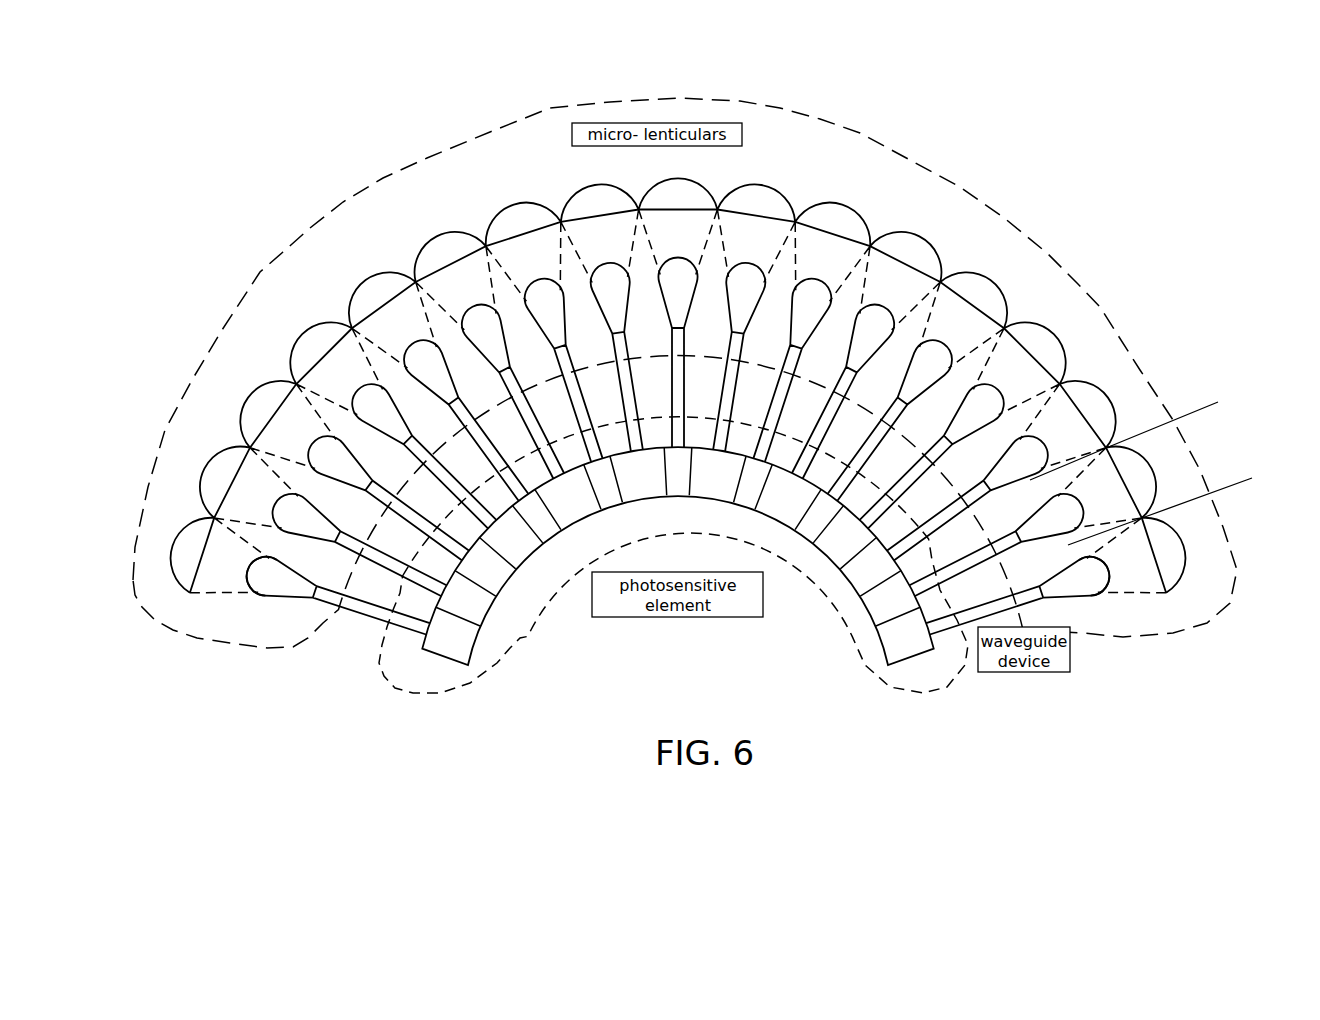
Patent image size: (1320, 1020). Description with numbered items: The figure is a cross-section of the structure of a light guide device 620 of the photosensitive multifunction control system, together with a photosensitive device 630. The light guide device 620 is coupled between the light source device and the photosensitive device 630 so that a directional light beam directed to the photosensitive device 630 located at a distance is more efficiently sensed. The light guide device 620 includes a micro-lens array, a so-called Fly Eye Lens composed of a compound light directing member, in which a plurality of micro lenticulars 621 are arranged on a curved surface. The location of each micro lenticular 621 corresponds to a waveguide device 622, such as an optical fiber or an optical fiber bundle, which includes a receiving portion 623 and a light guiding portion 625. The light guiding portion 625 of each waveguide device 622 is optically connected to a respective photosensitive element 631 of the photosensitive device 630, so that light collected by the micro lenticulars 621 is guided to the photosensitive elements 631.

The light guide device 620 is at (1008, 221).
The micro lenticular 621 is at (1060, 334).
The waveguide device 622 is at (1159, 469).
The receiving portion 623 is at (273, 596).
The light guiding portion 625 is at (946, 445).
The photosensitive device 630 is at (947, 692).
The photosensitive element 631 is at (808, 595).